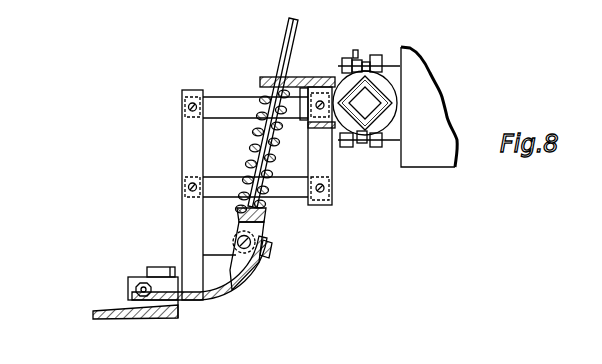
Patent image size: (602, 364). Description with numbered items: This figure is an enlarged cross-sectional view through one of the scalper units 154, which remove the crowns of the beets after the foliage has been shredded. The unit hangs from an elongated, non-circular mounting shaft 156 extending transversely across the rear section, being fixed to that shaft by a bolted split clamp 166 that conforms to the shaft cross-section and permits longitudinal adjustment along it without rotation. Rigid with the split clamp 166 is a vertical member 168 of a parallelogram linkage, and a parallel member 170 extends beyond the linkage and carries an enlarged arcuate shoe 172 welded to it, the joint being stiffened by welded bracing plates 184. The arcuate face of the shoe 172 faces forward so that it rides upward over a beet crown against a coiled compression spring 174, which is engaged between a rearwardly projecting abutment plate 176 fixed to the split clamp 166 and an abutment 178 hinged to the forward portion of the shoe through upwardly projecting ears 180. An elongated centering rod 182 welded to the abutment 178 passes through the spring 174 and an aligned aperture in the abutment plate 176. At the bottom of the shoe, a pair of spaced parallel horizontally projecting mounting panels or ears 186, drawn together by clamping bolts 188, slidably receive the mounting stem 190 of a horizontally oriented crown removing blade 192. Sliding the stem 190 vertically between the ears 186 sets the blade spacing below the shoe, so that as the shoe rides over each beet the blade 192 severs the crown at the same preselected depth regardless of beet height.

The scalper unit 154 is at (222, 65).
The mounting shaft 156 is at (395, 97).
The bolted split clamp 166 is at (390, 117).
The vertical member 168 is at (320, 162).
The member 170 is at (190, 143).
The arcuate shoe 172 is at (218, 300).
The coiled compression spring 174 is at (267, 203).
The abutment plate 176 is at (293, 78).
The abutment 178 is at (263, 227).
The upwardly projecting ears 180 is at (243, 262).
The centering rod 182 is at (288, 42).
The bracing plates 184 is at (215, 260).
The mounting panels or ears 186 is at (160, 287).
The clamping bolts 188 is at (133, 289).
The mounting stem 190 is at (162, 270).
The crown removing blade 192 is at (113, 318).